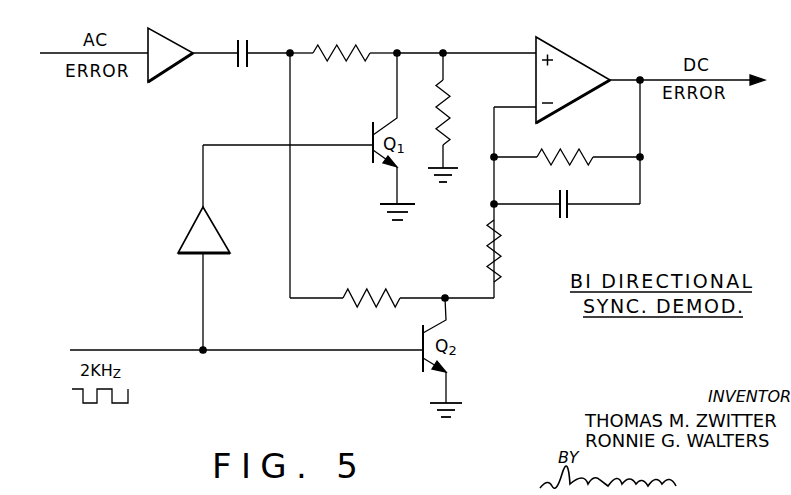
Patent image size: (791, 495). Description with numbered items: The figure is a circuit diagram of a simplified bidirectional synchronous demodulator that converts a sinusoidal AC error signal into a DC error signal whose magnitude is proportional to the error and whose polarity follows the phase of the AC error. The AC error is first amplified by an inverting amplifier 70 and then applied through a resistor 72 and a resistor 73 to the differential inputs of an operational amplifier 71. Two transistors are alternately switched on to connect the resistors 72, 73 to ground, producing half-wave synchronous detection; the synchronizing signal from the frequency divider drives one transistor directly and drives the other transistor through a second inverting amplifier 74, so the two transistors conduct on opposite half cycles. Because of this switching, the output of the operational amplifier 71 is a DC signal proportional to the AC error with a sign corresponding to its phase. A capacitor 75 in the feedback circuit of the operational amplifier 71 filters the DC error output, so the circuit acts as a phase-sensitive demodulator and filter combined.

The inverting amplifier 70 is at (175, 40).
The operational amplifier 71 is at (580, 59).
The resistor 72 is at (363, 51).
The resistor 73 is at (382, 289).
The inverting amplifier 74 is at (186, 221).
The capacitor 75 is at (570, 212).